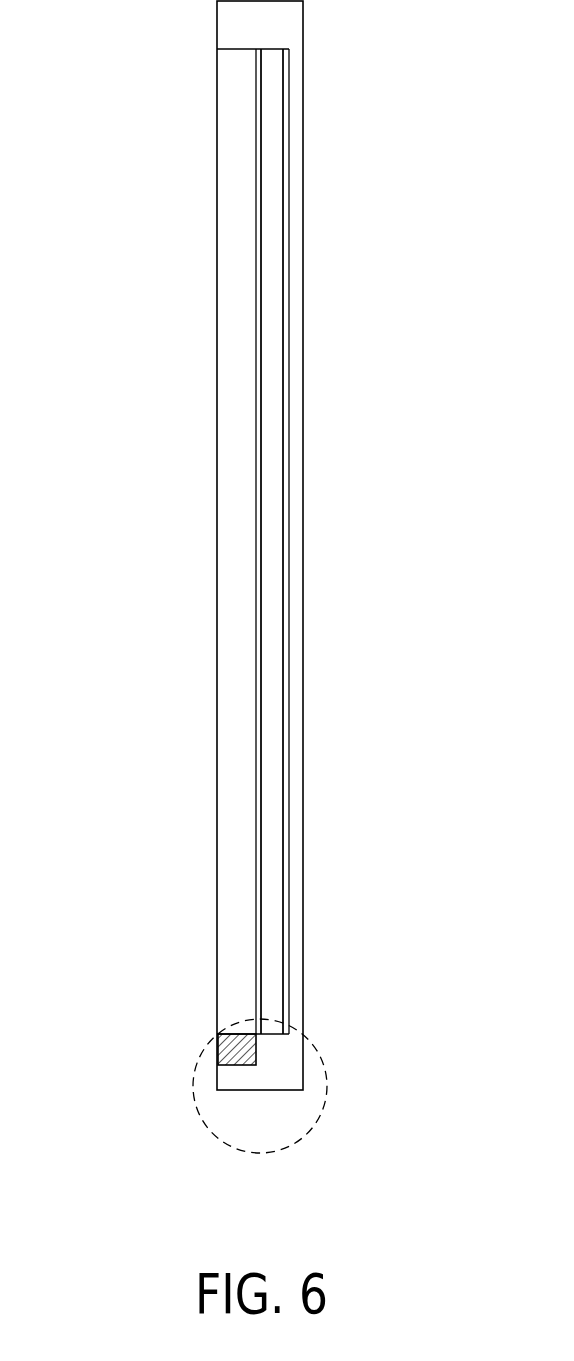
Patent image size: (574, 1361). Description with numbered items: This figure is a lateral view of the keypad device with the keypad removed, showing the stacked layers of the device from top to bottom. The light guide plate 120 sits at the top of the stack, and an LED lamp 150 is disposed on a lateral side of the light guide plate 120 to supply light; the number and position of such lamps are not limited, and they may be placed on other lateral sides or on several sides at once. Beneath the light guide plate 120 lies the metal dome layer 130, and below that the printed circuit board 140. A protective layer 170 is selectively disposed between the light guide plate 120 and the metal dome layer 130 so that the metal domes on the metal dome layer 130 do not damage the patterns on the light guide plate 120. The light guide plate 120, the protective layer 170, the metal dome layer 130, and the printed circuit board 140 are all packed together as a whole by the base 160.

The light guide plate 120 is at (242, 338).
The metal dome layer 130 is at (270, 442).
The printed circuit board 140 is at (287, 745).
The LED lamp 150 is at (217, 1036).
The base 160 is at (284, 1058).
The protective layer 170 is at (256, 272).